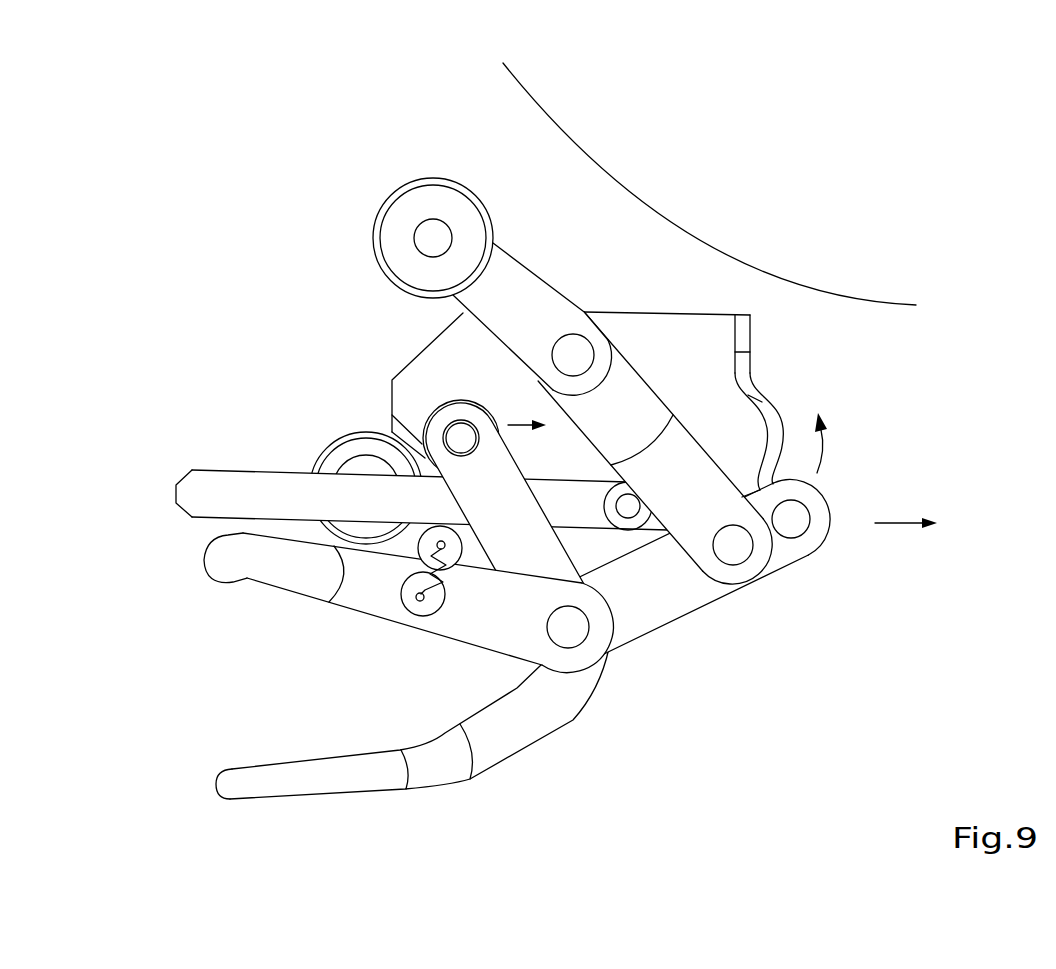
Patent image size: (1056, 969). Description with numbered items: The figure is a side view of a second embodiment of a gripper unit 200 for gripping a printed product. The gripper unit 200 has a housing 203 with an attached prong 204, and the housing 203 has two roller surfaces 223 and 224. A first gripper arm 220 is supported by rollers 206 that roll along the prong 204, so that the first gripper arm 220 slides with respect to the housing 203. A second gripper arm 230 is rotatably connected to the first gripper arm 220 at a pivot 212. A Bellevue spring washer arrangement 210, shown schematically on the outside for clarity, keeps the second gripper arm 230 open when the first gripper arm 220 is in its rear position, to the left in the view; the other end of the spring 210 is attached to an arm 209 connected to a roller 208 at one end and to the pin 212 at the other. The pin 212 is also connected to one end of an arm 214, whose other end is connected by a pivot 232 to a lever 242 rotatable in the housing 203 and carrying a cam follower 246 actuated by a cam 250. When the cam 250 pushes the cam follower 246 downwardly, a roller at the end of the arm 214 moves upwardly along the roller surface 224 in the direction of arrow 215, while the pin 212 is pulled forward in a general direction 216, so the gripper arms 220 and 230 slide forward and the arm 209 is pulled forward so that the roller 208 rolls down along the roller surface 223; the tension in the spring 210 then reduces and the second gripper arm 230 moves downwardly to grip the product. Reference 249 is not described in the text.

The gripper unit 200 is at (283, 253).
The housing 203 is at (748, 328).
The prong 204 is at (203, 492).
The rollers 206 is at (445, 408).
The roller 208 is at (337, 447).
The arm 209 is at (378, 546).
The Bellevue spring washer arrangement 210 is at (440, 607).
The pivot 212 is at (573, 635).
The arm 214 is at (653, 603).
The arrow 215 is at (823, 447).
The general direction 216 is at (900, 521).
The first gripper arm 220 is at (360, 780).
The roller surface 223 is at (390, 414).
The roller surface 224 is at (778, 420).
The second gripper arm 230 is at (227, 560).
The pivot 232 is at (736, 551).
The lever 242 is at (532, 308).
The cam follower 246 is at (457, 178).
The carriage plate 249 is at (655, 414).
The cam 250 is at (533, 93).